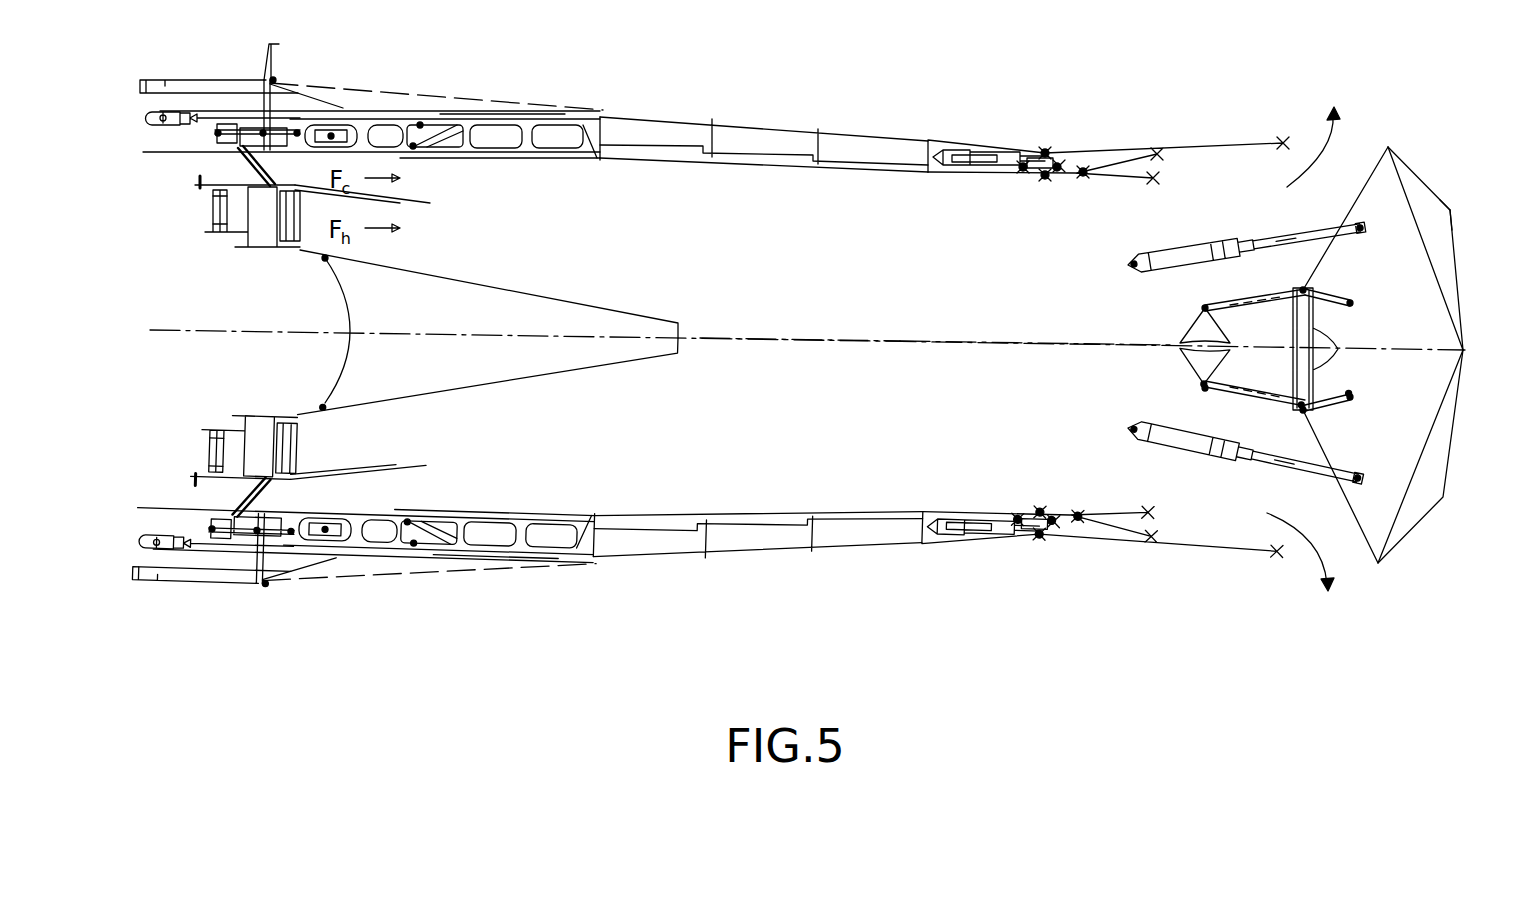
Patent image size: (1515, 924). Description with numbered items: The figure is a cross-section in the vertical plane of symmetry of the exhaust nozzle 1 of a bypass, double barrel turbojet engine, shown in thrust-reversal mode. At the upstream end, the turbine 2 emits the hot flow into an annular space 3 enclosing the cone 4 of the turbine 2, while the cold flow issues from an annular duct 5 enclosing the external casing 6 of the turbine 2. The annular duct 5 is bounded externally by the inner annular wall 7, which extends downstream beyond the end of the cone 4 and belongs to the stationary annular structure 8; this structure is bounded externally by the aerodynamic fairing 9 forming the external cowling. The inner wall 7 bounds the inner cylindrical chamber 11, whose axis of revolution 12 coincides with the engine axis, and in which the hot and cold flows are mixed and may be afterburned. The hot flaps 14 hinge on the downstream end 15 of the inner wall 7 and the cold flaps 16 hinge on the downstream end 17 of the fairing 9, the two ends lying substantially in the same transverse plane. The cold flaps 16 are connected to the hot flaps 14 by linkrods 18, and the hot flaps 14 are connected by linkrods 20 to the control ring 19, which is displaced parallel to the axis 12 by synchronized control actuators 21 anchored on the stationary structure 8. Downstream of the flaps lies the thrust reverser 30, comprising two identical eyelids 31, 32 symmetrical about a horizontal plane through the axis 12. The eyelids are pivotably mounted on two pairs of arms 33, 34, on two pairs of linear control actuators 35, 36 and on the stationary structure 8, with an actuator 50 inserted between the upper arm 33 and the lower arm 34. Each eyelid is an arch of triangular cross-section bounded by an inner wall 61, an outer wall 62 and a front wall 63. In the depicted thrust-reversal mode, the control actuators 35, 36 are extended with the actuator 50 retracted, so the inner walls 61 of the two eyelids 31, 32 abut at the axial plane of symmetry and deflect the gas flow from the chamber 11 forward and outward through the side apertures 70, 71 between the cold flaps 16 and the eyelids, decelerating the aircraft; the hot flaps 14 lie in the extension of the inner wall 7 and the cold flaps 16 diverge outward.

The exhaust nozzle 1 is at (592, 98).
The turbine 2 is at (242, 232).
The annular space 3 is at (451, 251).
The cone 4 is at (516, 296).
The annular duct 5 is at (198, 180).
The external casing 6 is at (210, 203).
The inner annular wall 7 is at (360, 148).
The stationary annular structure 8 is at (460, 118).
The aerodynamic fairing 9 is at (660, 110).
The inner cylindrical chamber 11 is at (949, 302).
The axis of revolution 12 is at (822, 330).
The hot flaps 14 is at (1108, 181).
The downstream end of the inner wall 15 is at (1044, 182).
The cold flaps 16 is at (1165, 143).
The downstream end of the fairing 17 is at (1043, 151).
The linkrods 18 is at (1119, 142).
The control ring 19 is at (1024, 175).
The linkrods 20 is at (1078, 140).
The control actuators 21 is at (958, 148).
The thrust reverser 30 is at (1391, 136).
The eyelid 31 is at (1440, 207).
The eyelid 32 is at (1425, 512).
The upper arm 33 is at (1265, 302).
The lower arm 34 is at (1256, 392).
The linear control actuator 35 is at (1200, 247).
The linear control actuator 36 is at (1181, 453).
The actuator 50 is at (1330, 332).
The inner wall 61 is at (1422, 262).
The outer wall 62 is at (1455, 245).
The front wall 63 is at (1420, 165).
The side aperture 70 is at (1308, 137).
The side aperture 71 is at (1333, 553).